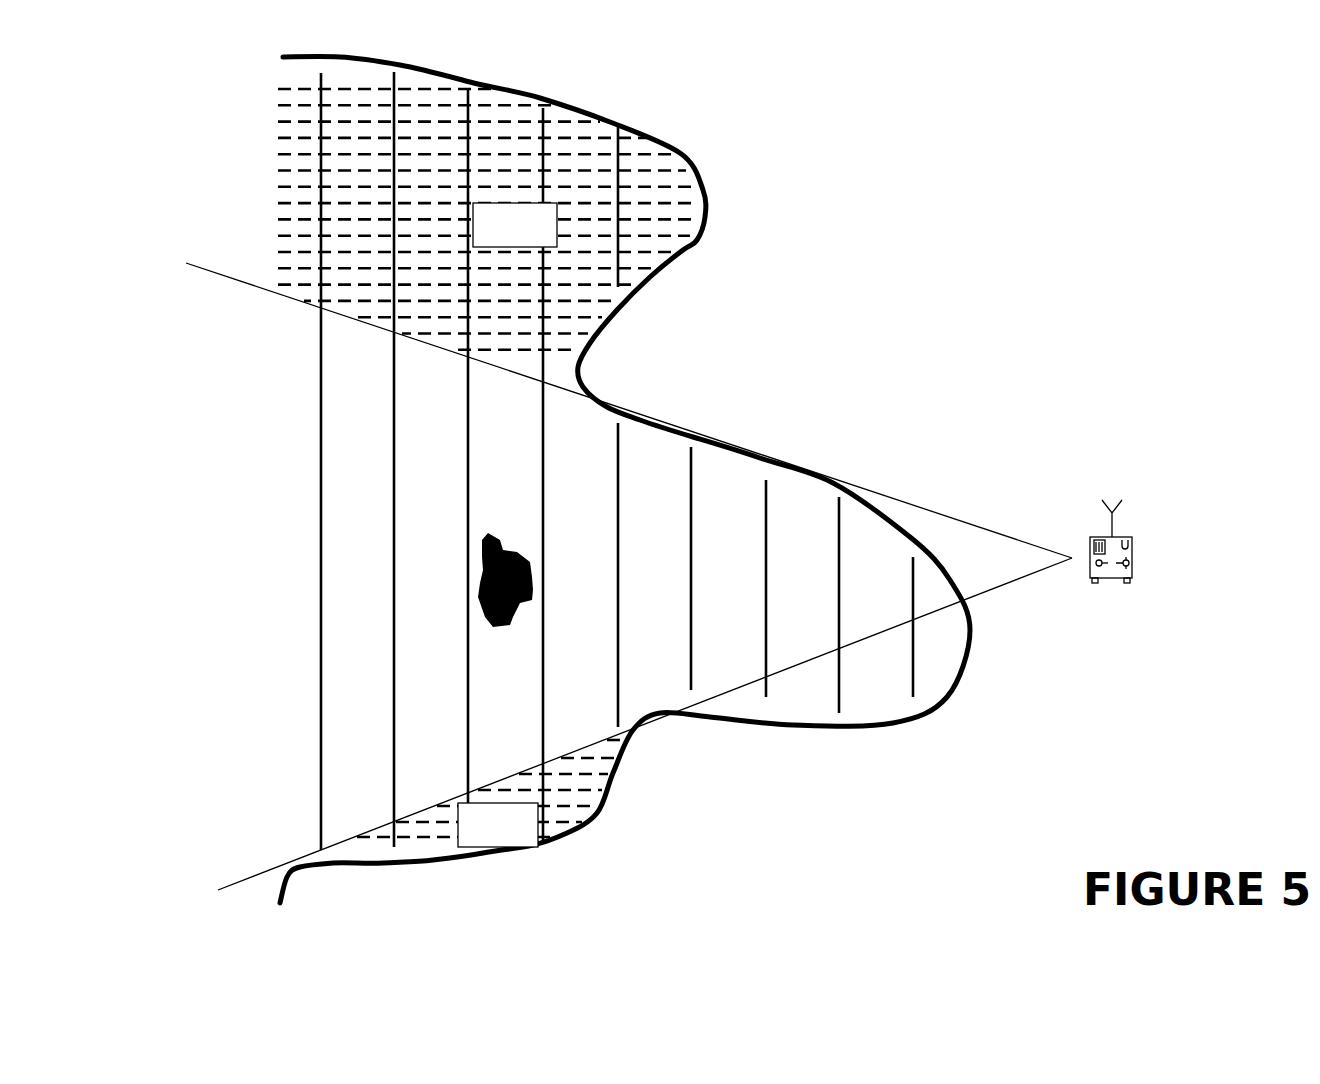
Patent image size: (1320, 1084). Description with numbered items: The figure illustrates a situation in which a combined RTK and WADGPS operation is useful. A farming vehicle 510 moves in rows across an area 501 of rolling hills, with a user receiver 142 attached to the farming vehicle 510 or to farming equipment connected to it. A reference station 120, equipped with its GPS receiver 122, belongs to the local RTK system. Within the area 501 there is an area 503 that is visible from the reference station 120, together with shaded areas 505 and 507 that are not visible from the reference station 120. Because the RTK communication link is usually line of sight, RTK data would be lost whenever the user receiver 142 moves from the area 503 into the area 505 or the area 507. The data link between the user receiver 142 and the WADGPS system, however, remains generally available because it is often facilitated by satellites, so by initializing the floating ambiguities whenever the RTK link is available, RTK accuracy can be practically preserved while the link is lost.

The area of rolling hills 501 is at (591, 576).
The visible area 503 is at (617, 461).
The non-visible shaded area 505 is at (487, 219).
The non-visible shaded area 507 is at (489, 793).
The farming vehicle 510 is at (511, 567).
The user receiver 142 is at (533, 575).
The reference station 120 is at (1097, 560).
The GPS receiver 122 is at (1113, 580).